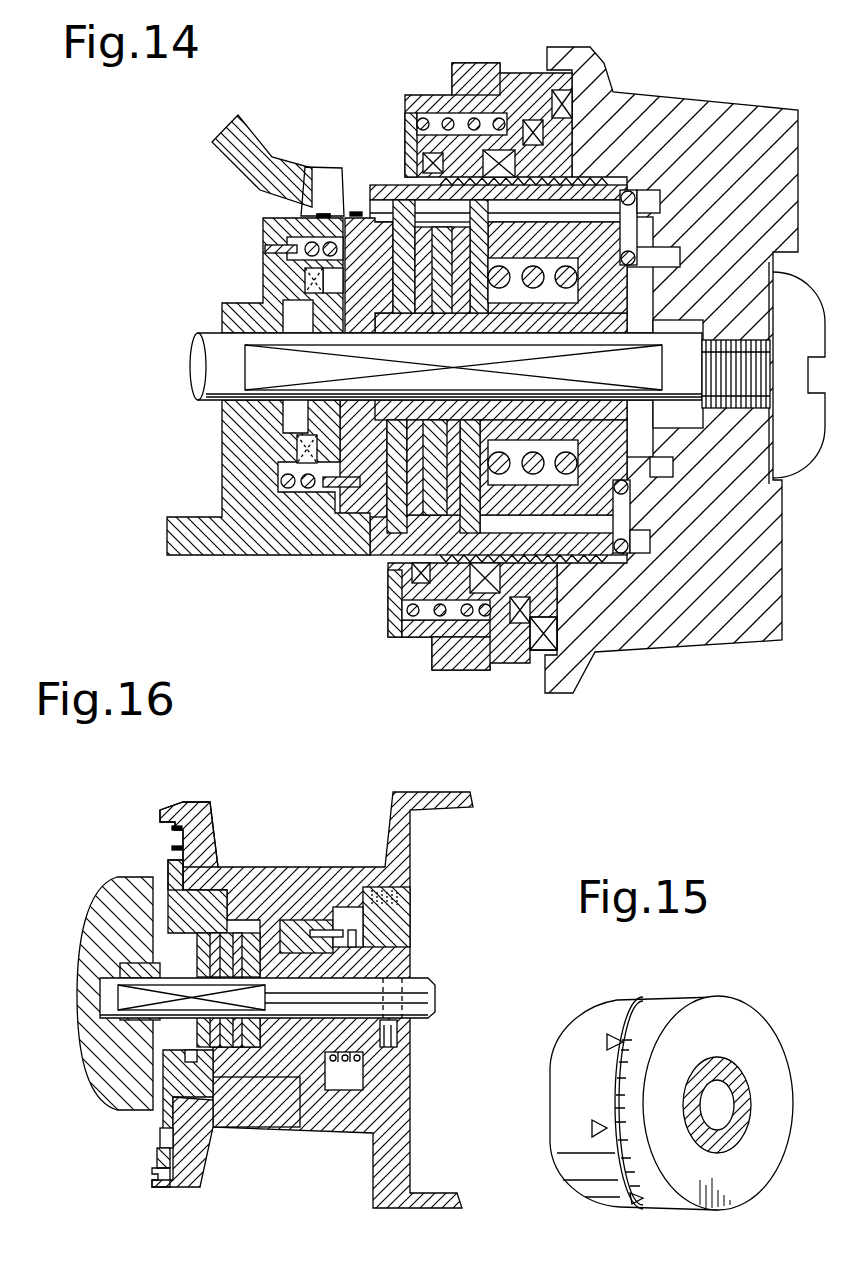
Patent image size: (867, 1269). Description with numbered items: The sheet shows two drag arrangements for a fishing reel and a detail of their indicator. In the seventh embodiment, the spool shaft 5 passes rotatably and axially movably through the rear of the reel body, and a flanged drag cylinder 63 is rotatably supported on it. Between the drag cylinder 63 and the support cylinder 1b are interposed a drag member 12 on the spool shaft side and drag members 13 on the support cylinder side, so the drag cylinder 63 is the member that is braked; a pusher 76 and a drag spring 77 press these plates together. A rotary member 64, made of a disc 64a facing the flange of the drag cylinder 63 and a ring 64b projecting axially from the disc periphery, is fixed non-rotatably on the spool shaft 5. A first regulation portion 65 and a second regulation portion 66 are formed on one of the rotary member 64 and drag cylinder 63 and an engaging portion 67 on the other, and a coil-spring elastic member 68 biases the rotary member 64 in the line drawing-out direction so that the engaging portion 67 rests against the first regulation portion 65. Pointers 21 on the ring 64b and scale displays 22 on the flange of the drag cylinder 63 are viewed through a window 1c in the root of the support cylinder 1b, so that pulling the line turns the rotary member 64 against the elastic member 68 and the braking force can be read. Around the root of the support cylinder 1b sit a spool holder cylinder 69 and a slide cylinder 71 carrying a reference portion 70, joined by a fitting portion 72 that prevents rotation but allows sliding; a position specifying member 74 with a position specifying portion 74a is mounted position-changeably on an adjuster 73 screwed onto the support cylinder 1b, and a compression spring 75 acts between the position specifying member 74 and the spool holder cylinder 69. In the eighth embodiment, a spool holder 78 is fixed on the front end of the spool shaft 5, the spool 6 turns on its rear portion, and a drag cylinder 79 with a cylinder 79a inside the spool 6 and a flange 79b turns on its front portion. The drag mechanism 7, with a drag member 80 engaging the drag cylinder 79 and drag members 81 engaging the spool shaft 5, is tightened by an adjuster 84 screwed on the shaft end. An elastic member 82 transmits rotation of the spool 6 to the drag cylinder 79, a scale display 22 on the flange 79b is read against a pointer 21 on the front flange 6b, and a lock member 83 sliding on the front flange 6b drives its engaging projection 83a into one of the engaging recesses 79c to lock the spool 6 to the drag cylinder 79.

In FIG. 14, the spool shaft 5 is at (200, 372).
In FIG. 16, the spool shaft 5 is at (430, 995).
In FIG. 14, the drag member 12 is at (405, 548).
In FIG. 14, the drag members 13 is at (378, 548).
In FIG. 14, the support cylinder 1b is at (340, 548).
In FIG. 14, the window 1c is at (347, 180).
In FIG. 14, the pointers 21 is at (323, 214).
In FIG. 16, the pointers 21 is at (175, 828).
In FIG. 15, the pointers 21 is at (607, 1042).
In FIG. 14, the scale displays 22 is at (356, 212).
In FIG. 16, the scale displays 22 is at (172, 850).
In FIG. 15, the scale displays 22 is at (638, 1092).
In FIG. 14, the drag cylinder 63 is at (368, 223).
In FIG. 15, the drag cylinder 63 is at (743, 1018).
In FIG. 14, the rotary member 64 is at (302, 223).
In FIG. 15, the rotary member 64 is at (597, 1020).
In FIG. 14, the disc 64a is at (267, 420).
In FIG. 14, the ring 64b is at (278, 219).
In FIG. 14, the first regulation portion 65 is at (305, 250).
In FIG. 14, the second regulation portion 66 is at (305, 455).
In FIG. 14, the engaging portion 67 is at (312, 283).
In FIG. 14, the elastic member 68 is at (310, 245).
In FIG. 14, the spool holder cylinder 69 is at (398, 637).
In FIG. 14, the reference portion 70 is at (522, 622).
In FIG. 14, the slide cylinder 71 is at (530, 563).
In FIG. 14, the fitting portion 72 is at (485, 588).
In FIG. 14, the adjuster 73 is at (663, 637).
In FIG. 14, the position specifying member 74 is at (507, 595).
In FIG. 14, the position specifying portion 74a is at (521, 620).
In FIG. 14, the compression spring 75 is at (440, 614).
In FIG. 14, the pusher 76 is at (657, 472).
In FIG. 14, the drag spring 77 is at (567, 490).
In FIG. 16, the spool 6 is at (293, 868).
In FIG. 16, the front flange 6b is at (188, 803).
In FIG. 16, the drag mechanism 7 is at (241, 928).
In FIG. 16, the spool holder 78 is at (395, 1088).
In FIG. 16, the drag cylinder 79 is at (163, 903).
In FIG. 16, the cylinder 79a is at (277, 1060).
In FIG. 16, the flange 79b is at (173, 870).
In FIG. 16, the engaging recesses 79c is at (160, 1133).
In FIG. 16, the drag member 80 is at (213, 1123).
In FIG. 16, the drag members 81 is at (228, 1043).
In FIG. 16, the elastic member 82 is at (353, 942).
In FIG. 16, the lock member 83 is at (157, 1165).
In FIG. 16, the engaging projection 83a is at (160, 1147).
In FIG. 16, the adjuster 84 is at (82, 942).